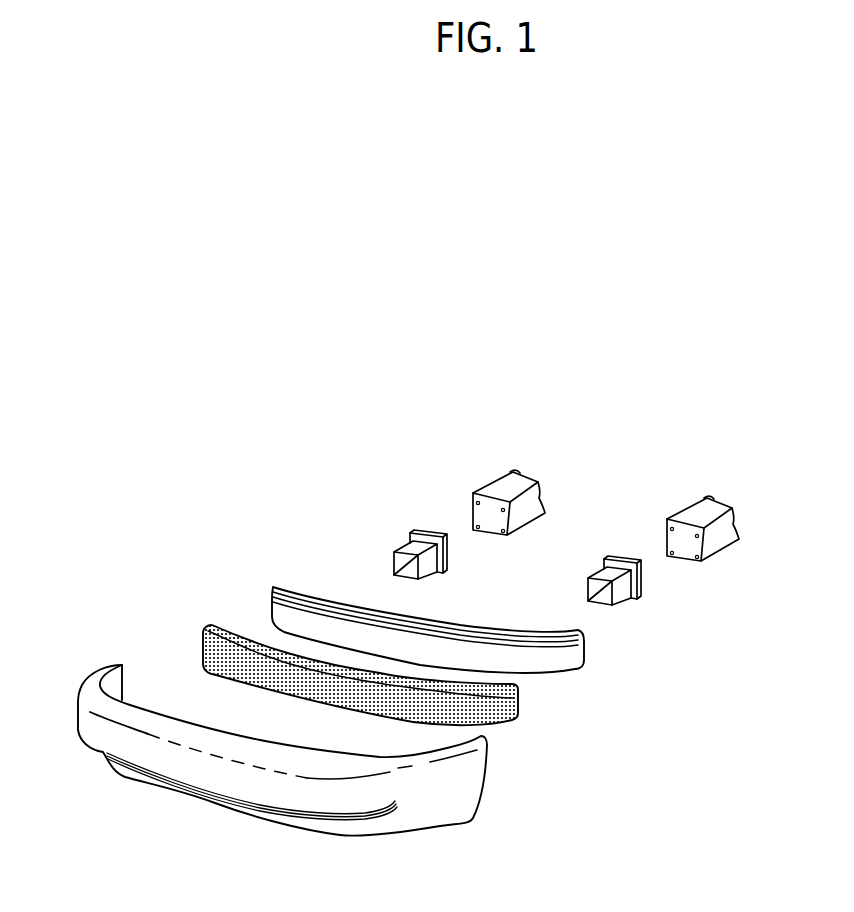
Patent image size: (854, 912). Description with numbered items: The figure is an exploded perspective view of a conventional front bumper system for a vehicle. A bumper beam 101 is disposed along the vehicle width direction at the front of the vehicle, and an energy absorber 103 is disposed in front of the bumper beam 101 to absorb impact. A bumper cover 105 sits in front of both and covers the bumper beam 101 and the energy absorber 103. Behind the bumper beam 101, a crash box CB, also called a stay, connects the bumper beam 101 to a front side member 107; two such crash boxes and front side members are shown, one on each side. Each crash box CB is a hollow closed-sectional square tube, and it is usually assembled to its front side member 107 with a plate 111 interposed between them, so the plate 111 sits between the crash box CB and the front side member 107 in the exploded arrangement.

The bumper beam 101 is at (282, 612).
The energy absorber 103 is at (210, 627).
The bumper cover 105 is at (112, 667).
The front side member 107 is at (495, 482).
The plate 111 is at (427, 530).
The crash box CB is at (405, 543).